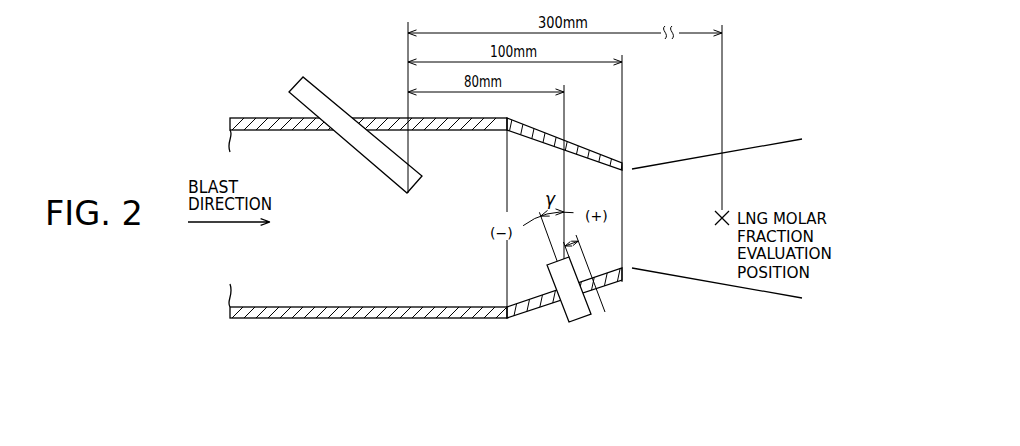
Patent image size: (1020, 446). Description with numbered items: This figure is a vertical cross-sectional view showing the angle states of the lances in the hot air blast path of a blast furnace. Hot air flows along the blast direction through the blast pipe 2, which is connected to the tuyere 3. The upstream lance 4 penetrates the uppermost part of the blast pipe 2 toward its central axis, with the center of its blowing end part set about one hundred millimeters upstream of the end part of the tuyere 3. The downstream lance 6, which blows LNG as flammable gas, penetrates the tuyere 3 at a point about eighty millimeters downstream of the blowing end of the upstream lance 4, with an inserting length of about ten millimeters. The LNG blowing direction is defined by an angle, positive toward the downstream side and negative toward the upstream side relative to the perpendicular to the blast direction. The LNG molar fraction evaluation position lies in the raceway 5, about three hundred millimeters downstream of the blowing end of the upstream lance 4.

The blast pipe 2 is at (355, 320).
The tuyere 3 is at (531, 318).
The upstream lance 4 is at (325, 95).
The raceway 5 is at (737, 291).
The downstream lance 6 is at (588, 313).